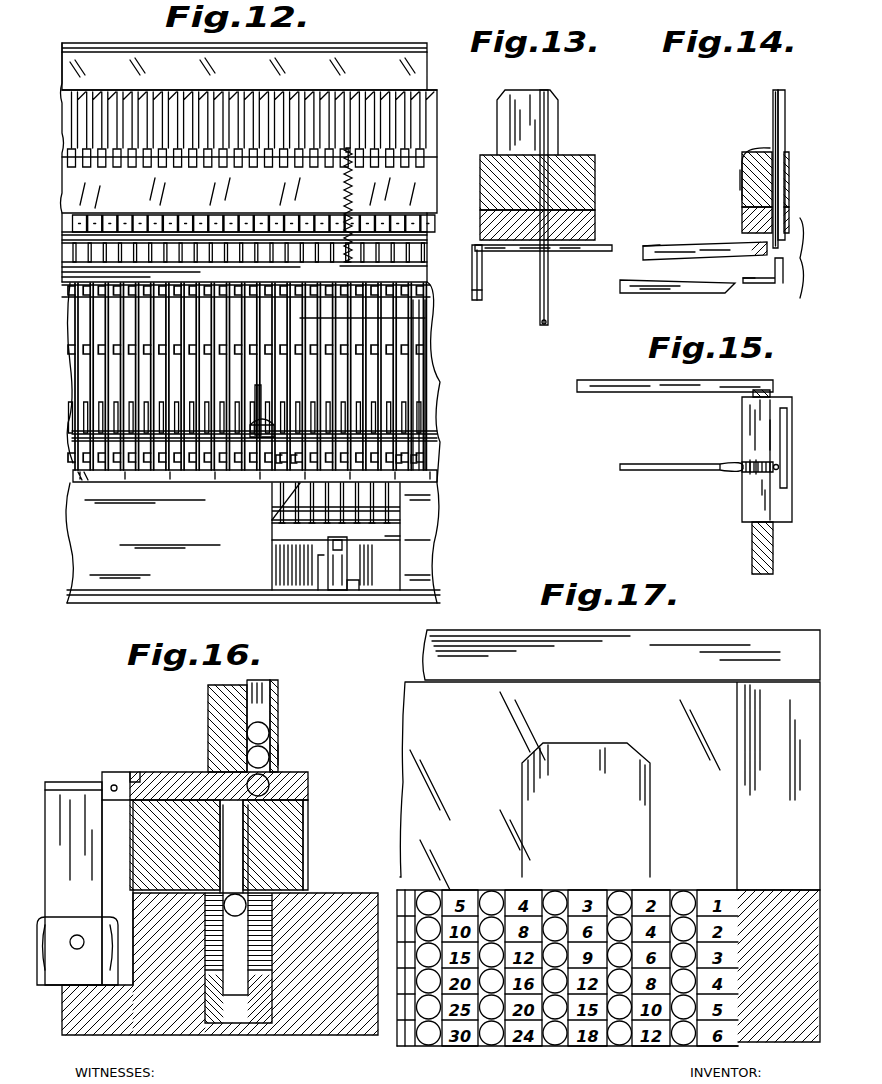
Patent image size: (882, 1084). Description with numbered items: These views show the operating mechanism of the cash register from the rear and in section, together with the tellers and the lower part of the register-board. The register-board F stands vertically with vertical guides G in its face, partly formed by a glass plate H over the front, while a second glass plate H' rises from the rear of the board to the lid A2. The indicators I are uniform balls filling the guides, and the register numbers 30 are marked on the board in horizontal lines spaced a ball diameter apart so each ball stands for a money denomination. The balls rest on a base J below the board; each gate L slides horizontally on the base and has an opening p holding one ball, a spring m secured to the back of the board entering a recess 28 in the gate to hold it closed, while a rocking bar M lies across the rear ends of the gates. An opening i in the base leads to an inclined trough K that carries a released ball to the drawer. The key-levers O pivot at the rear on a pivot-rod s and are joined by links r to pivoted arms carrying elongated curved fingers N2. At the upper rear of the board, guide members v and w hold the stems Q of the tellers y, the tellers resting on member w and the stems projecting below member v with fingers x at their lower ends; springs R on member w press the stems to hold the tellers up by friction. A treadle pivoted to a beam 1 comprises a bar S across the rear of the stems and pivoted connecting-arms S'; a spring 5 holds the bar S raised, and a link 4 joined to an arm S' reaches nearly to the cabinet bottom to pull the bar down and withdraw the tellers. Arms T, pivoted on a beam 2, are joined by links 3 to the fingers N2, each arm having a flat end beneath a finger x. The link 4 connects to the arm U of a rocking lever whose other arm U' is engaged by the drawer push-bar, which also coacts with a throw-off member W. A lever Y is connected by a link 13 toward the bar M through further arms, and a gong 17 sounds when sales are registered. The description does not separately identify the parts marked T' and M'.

In FIG. 12, the lid A2 is at (368, 40).
In FIG. 17, the lid A2 is at (425, 660).
In FIG. 12, the glass plate H' is at (224, 71).
In FIG. 12, the teller y is at (64, 110).
In FIG. 13, the teller y is at (500, 100).
In FIG. 14, the teller y is at (786, 115).
In FIG. 15, the teller y is at (790, 440).
In FIG. 17, the teller y is at (650, 775).
In FIG. 12, the stem Q is at (70, 143).
In FIG. 13, the stem Q is at (550, 278).
In FIG. 14, the stem Q is at (773, 108).
In FIG. 15, the stem Q is at (780, 467).
In FIG. 12, the spring R is at (70, 165).
In FIG. 14, the spring R is at (762, 148).
In FIG. 15, the spring R is at (752, 474).
In FIG. 12, the supporting and guide member w is at (428, 183).
In FIG. 13, the supporting and guide member w is at (596, 175).
In FIG. 14, the supporting and guide member w is at (790, 165).
In FIG. 15, the supporting and guide member w is at (792, 500).
In FIG. 12, the spring 5 is at (344, 188).
In FIG. 12, the supporting and guide member v is at (428, 224).
In FIG. 13, the supporting and guide member v is at (596, 224).
In FIG. 14, the supporting and guide member v is at (790, 215).
In FIG. 12, the pivot-rod s is at (428, 240).
In FIG. 12, the connecting-arm S' is at (257, 259).
In FIG. 13, the connecting-arm S' is at (493, 284).
In FIG. 14, the connecting-arm S' is at (651, 234).
In FIG. 15, the connecting-arm S' is at (675, 401).
In FIG. 12, the beam 1 is at (62, 276).
In FIG. 12, the beam 2 is at (72, 294).
In FIG. 12, the arm T is at (225, 376).
In FIG. 14, the arm T is at (677, 303).
In FIG. 12, the needle T' is at (261, 288).
In FIG. 12, the link 4 is at (425, 318).
In FIG. 12, the link 3 is at (419, 330).
In FIG. 12, the curved finger N2 is at (430, 376).
In FIG. 12, the spring m is at (75, 423).
In FIG. 12, the rocking bar M is at (273, 431).
In FIG. 16, the rocking bar M is at (89, 865).
In FIG. 12, the gate L is at (73, 455).
In FIG. 16, the gate L is at (176, 772).
In FIG. 12, the link r is at (438, 456).
In FIG. 12, the key-lever O is at (437, 520).
In FIG. 12, the bell or gong 17 is at (272, 483).
In FIG. 12, the link 13 is at (290, 487).
In FIG. 12, the lever Y is at (272, 530).
In FIG. 12, the bar S is at (303, 563).
In FIG. 13, the bar S is at (543, 267).
In FIG. 14, the bar S is at (705, 235).
In FIG. 15, the bar S is at (745, 548).
In FIG. 12, the arm U' is at (307, 592).
In FIG. 12, the throw-off member W is at (340, 577).
In FIG. 12, the arm U is at (360, 604).
In FIG. 13, the finger x is at (540, 326).
In FIG. 14, the finger x is at (755, 278).
In FIG. 16, the guide G is at (278, 700).
In FIG. 17, the guide G is at (692, 895).
In FIG. 16, the register-board F is at (208, 728).
In FIG. 17, the register-board F is at (725, 895).
In FIG. 16, the indicator I is at (270, 735).
In FIG. 17, the indicator I is at (678, 893).
In FIG. 16, the glass plate H is at (307, 756).
In FIG. 17, the glass plate H is at (594, 786).
In FIG. 16, the recess 28 is at (140, 772).
In FIG. 16, the opening p is at (308, 806).
In FIG. 16, the base J is at (290, 835).
In FIG. 16, the opening i is at (243, 850).
In FIG. 16, the pulley M' is at (77, 939).
In FIG. 16, the inclined trough K is at (238, 1000).
In FIG. 17, the register number 30 is at (458, 890).